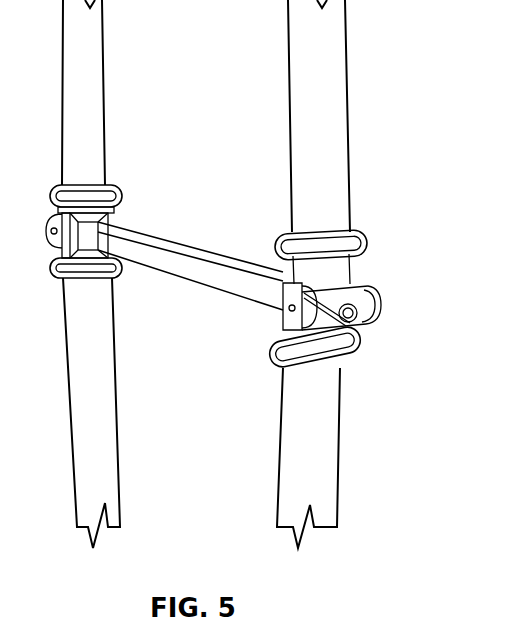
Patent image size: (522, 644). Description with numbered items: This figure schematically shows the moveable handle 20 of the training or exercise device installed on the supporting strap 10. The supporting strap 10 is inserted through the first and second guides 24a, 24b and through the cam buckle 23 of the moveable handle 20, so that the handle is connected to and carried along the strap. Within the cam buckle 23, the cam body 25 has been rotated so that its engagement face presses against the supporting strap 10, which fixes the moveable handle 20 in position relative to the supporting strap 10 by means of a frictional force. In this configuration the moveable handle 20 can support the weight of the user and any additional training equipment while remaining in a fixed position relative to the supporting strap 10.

The supporting strap 10 is at (84, 478).
The moveable handle 20 is at (193, 282).
The cam buckle 23 is at (372, 337).
The first guide 24a is at (372, 243).
The second guide 24b is at (274, 360).
The cam body 25 is at (357, 336).